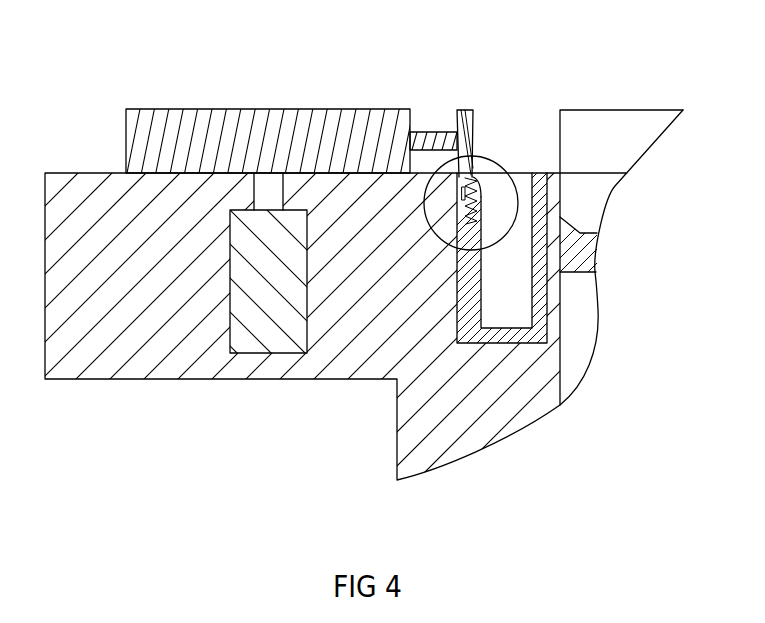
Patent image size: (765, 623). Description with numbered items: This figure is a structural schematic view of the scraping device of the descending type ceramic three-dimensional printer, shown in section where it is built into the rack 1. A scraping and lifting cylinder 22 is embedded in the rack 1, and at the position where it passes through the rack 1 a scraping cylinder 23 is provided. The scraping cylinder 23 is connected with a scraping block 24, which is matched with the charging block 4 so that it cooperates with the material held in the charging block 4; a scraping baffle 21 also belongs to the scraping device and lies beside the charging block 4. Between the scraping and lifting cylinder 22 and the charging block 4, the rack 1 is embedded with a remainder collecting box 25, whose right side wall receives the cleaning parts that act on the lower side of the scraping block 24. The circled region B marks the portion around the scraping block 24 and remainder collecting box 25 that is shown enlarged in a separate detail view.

The rack 1 is at (340, 337).
The scraping baffle 21 is at (606, 137).
The scraping and lifting cylinder 22 is at (278, 247).
The scraping cylinder 23 is at (356, 110).
The scraping block 24 is at (464, 112).
The remainder collecting box 25 is at (500, 345).
The charging block 4 is at (586, 266).
The partially enlarged region B is at (488, 155).